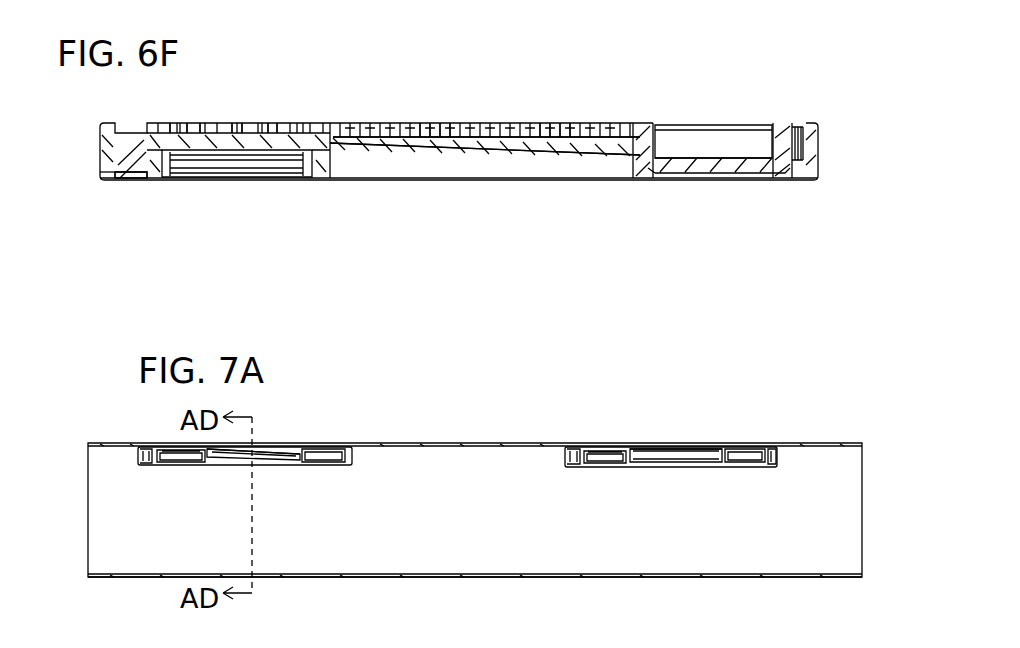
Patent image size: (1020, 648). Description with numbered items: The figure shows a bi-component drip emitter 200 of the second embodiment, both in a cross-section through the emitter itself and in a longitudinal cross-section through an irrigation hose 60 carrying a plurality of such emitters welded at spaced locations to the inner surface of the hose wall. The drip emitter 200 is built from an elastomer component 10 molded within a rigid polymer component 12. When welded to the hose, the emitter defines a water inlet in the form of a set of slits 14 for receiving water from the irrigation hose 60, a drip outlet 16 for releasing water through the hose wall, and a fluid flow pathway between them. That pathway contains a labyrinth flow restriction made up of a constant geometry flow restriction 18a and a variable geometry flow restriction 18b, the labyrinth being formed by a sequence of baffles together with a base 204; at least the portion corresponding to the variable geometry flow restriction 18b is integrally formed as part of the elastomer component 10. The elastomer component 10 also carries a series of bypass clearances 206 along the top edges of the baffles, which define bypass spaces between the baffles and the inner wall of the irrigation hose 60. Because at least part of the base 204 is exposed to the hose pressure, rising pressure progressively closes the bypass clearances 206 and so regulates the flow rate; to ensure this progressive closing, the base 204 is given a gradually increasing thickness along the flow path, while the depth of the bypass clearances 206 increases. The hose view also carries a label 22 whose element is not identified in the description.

In FIG. 6F, the drip emitter 200 is at (621, 94).
In FIG. 7A, the drip emitter 200 is at (322, 446).
In FIG. 6F, the constant geometry flow restriction 18a is at (280, 118).
In FIG. 6F, the slits 14 is at (126, 182).
In FIG. 6F, the rigid polymer component 12 is at (235, 189).
In FIG. 6F, the base 204 is at (440, 140).
In FIG. 6F, the elastomer component 10 is at (485, 153).
In FIG. 6F, the variable geometry flow restriction 18b is at (557, 141).
In FIG. 6F, the drip outlet 16 is at (720, 135).
In FIG. 7A, the circuit board 22 is at (475, 545).
In FIG. 7A, the bypass clearances 206 is at (464, 548).
In FIG. 7A, the irrigation hose 60 is at (607, 587).